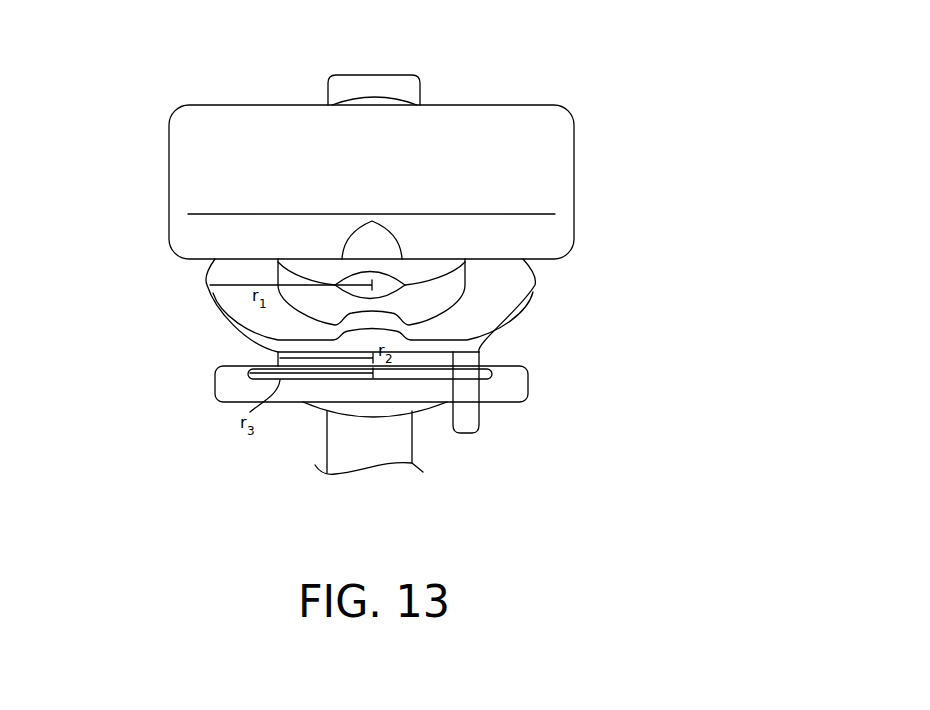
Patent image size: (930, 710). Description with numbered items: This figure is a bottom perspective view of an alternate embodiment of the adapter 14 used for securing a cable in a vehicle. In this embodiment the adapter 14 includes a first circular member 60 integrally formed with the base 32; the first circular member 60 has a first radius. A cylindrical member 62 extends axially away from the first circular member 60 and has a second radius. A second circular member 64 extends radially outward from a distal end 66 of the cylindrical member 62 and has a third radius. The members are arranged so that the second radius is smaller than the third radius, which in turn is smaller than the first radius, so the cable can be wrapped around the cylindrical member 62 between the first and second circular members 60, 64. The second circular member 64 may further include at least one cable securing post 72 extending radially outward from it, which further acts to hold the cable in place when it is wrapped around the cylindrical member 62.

The adapter 14 is at (96, 94).
The base 32 is at (552, 155).
The first circular member 60 is at (512, 285).
The cylindrical member 62 is at (278, 354).
The second circular member 64 is at (317, 402).
The distal end 66 is at (499, 358).
The cable securing post 72 is at (223, 388).